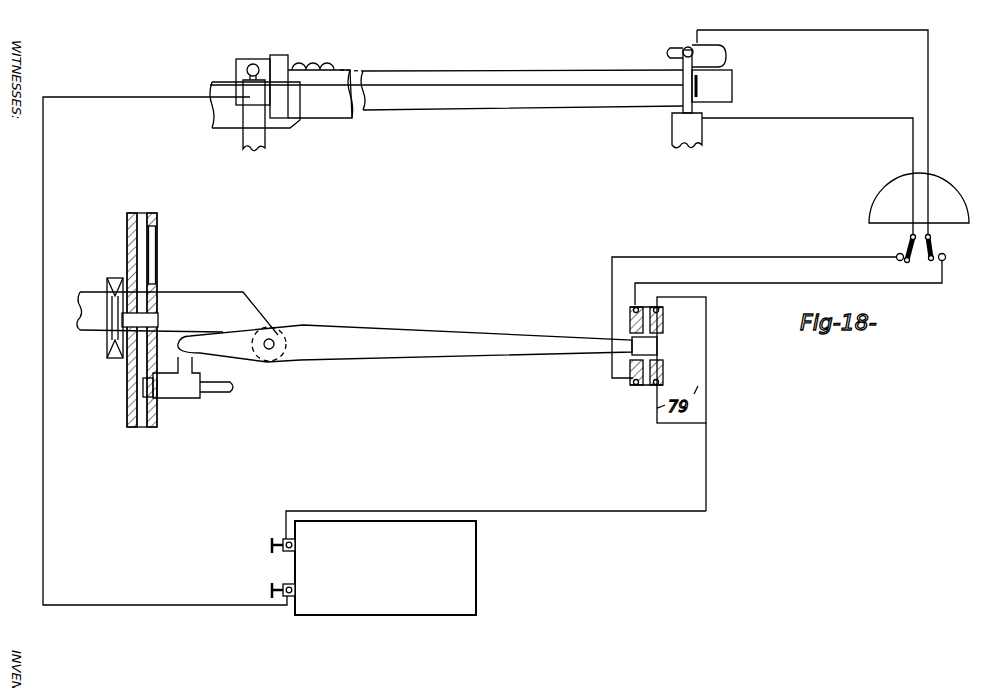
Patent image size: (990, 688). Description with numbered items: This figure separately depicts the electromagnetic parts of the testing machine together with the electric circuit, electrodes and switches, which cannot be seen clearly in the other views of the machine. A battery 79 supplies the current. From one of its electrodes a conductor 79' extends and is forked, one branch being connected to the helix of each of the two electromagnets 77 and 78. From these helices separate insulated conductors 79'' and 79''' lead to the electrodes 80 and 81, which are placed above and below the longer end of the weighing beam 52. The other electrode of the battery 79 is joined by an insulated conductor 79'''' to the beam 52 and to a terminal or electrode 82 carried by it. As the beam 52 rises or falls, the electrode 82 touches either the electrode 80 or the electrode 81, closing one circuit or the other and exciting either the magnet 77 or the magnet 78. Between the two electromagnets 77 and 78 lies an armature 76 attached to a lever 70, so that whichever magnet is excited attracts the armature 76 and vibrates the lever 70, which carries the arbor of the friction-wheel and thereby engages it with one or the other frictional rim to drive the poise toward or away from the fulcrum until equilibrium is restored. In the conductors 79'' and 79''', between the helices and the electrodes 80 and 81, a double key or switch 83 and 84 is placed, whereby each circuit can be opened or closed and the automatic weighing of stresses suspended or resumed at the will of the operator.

The beam 52 is at (453, 96).
The lever 70 is at (405, 343).
The armature 76 is at (658, 351).
The electromagnet 77 is at (658, 319).
The electromagnet 78 is at (657, 374).
The battery 79 is at (374, 568).
The conductor 79' is at (496, 513).
The insulated conductor 79'' is at (754, 307).
The insulated conductor 79''' is at (788, 286).
The insulated conductor 79'''' is at (165, 351).
The electrode 80 is at (710, 60).
The electrode 81 is at (708, 107).
The terminal or electrode 82 is at (712, 86).
The key or switch 83 is at (919, 218).
The key or switch 84 is at (936, 238).